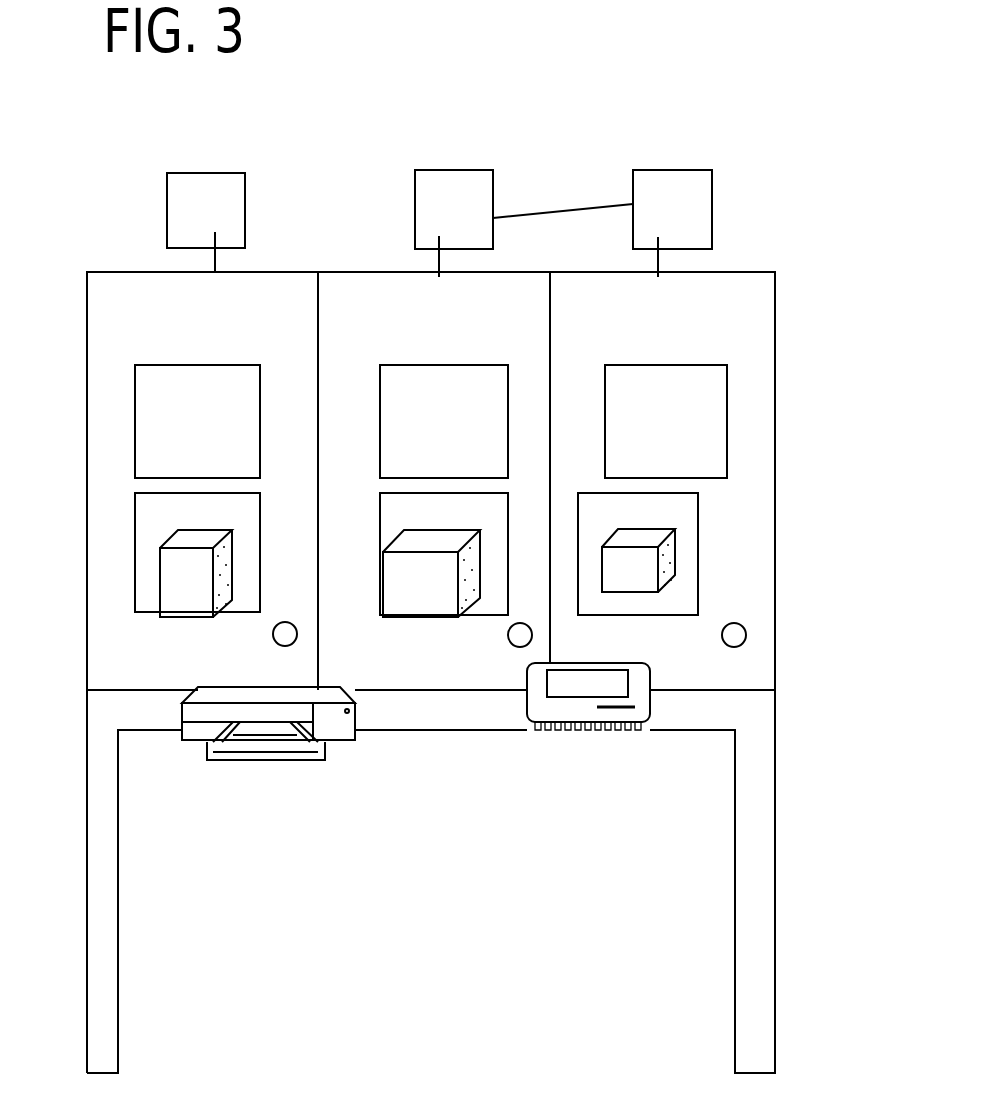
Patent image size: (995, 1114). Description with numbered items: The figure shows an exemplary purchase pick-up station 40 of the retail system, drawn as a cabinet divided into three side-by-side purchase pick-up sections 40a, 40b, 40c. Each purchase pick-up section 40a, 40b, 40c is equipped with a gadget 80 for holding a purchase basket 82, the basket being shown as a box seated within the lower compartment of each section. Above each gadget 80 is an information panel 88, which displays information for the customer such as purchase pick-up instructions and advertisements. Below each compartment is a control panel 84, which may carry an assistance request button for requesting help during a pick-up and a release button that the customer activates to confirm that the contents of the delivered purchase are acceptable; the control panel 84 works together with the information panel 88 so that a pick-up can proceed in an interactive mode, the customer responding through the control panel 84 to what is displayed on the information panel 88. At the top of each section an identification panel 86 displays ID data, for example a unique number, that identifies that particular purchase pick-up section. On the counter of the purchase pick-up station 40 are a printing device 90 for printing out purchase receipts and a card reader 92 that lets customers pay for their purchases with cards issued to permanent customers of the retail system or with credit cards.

The purchase pick-up station 40 is at (105, 223).
The purchase pick-up section 40a is at (185, 323).
The purchase pick-up section 40b is at (410, 323).
The purchase pick-up section 40c is at (637, 323).
The identification (ID) panel 86 is at (245, 202).
The information panel 88 is at (243, 418).
The gadget 80 is at (672, 524).
The purchase basket 82 is at (678, 559).
The control panel 84 is at (273, 640).
The printing device 90 is at (290, 760).
The card reader 92 is at (590, 730).